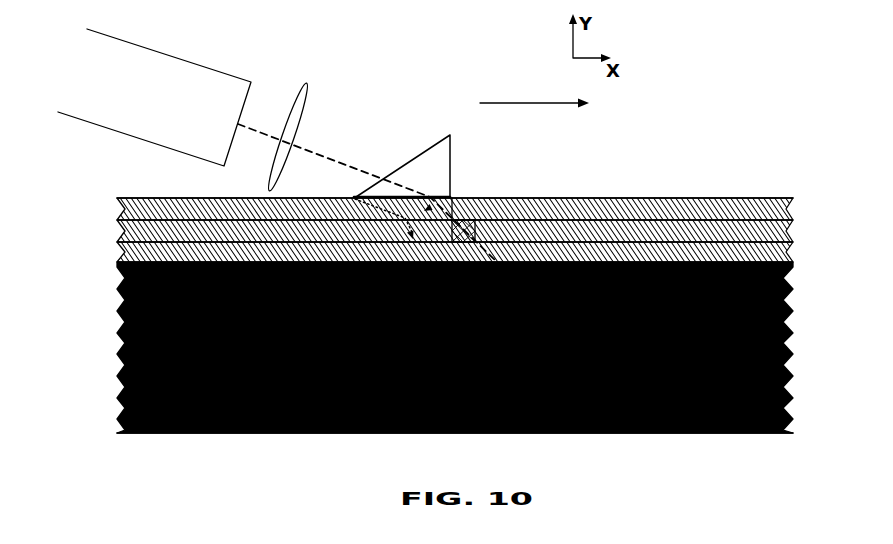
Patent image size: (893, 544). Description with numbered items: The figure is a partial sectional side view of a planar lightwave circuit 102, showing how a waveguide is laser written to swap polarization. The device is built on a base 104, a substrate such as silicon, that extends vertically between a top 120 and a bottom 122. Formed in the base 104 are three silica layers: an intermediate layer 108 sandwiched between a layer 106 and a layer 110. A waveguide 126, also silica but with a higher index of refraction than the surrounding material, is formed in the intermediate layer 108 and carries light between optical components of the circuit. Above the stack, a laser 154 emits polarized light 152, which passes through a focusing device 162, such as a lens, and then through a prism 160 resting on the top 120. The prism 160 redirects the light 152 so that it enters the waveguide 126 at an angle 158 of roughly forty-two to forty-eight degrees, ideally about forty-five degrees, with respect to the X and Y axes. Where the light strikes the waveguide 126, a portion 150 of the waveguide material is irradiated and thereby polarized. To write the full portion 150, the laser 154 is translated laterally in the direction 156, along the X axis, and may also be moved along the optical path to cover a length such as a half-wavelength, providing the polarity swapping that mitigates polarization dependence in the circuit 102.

The planar lightwave circuit 102 is at (700, 86).
The base 104 is at (595, 433).
The layer 106 is at (792, 253).
The intermediate layer 108 is at (793, 231).
The layer 110 is at (793, 209).
The top 120 is at (737, 198).
The bottom 122 is at (372, 433).
The waveguide 126 is at (478, 238).
The portion of the waveguide 150 is at (475, 201).
The polarized light 152 is at (318, 148).
The laser 154 is at (207, 68).
The lateral direction 156 is at (528, 103).
The angle 158 is at (352, 197).
The prism 160 is at (451, 152).
The focusing device 162 is at (301, 93).